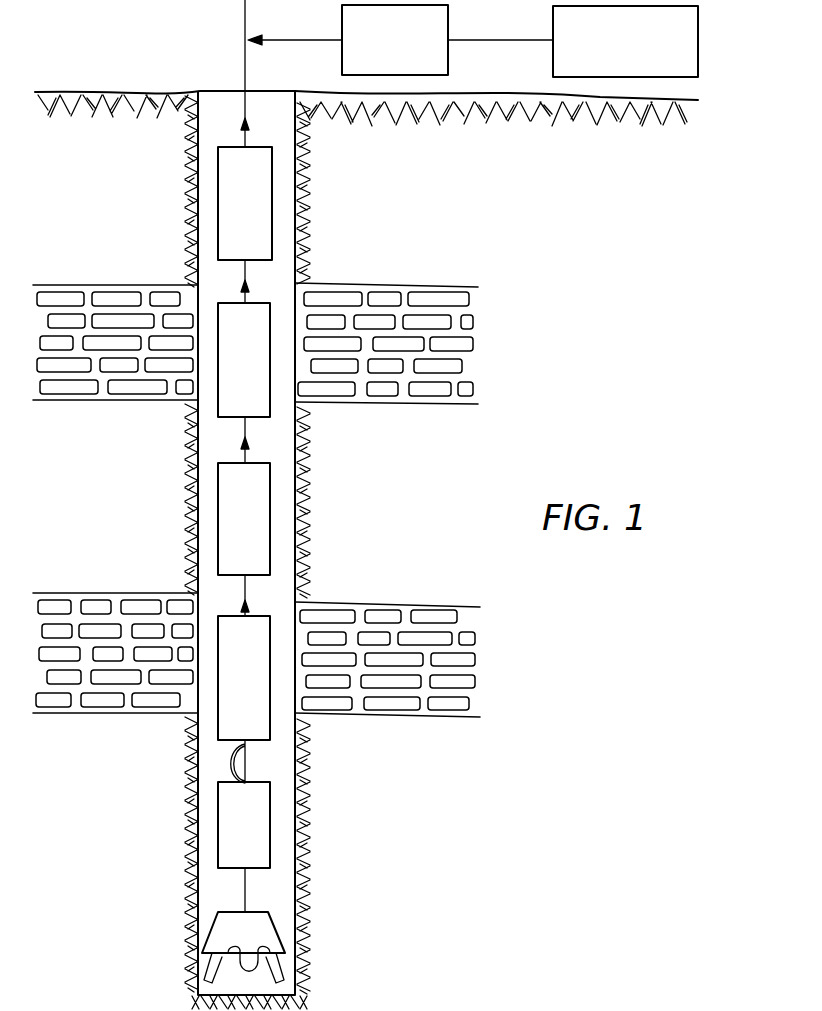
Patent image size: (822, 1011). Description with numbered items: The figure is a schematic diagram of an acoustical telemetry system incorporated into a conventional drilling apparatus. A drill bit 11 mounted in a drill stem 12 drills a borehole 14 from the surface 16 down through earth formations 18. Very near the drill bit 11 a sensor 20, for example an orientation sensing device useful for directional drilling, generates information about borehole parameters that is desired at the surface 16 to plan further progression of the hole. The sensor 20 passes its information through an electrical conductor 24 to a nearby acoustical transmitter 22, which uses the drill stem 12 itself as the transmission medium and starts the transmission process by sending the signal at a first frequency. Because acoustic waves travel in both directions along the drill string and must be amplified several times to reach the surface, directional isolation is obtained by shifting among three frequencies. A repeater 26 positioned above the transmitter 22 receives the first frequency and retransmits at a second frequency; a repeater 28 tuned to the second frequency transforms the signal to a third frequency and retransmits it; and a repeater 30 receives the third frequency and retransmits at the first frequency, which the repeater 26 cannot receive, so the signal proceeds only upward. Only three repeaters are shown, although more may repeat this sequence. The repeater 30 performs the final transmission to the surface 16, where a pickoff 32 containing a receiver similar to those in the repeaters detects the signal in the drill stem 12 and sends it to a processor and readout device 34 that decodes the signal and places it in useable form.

The drill bit 11 is at (278, 934).
The drill stem 12 is at (241, 434).
The borehole 14 is at (293, 503).
The surface 16 is at (145, 92).
The earth formations 18 is at (416, 209).
The sensor 20 is at (270, 828).
The acoustical transmitter 22 is at (218, 712).
The electrical conductor 24 is at (228, 757).
The repeater 26 is at (270, 541).
The repeater 28 is at (218, 405).
The repeater 30 is at (272, 192).
The pickoff 32 is at (450, 22).
The processor and readout device 34 is at (700, 24).